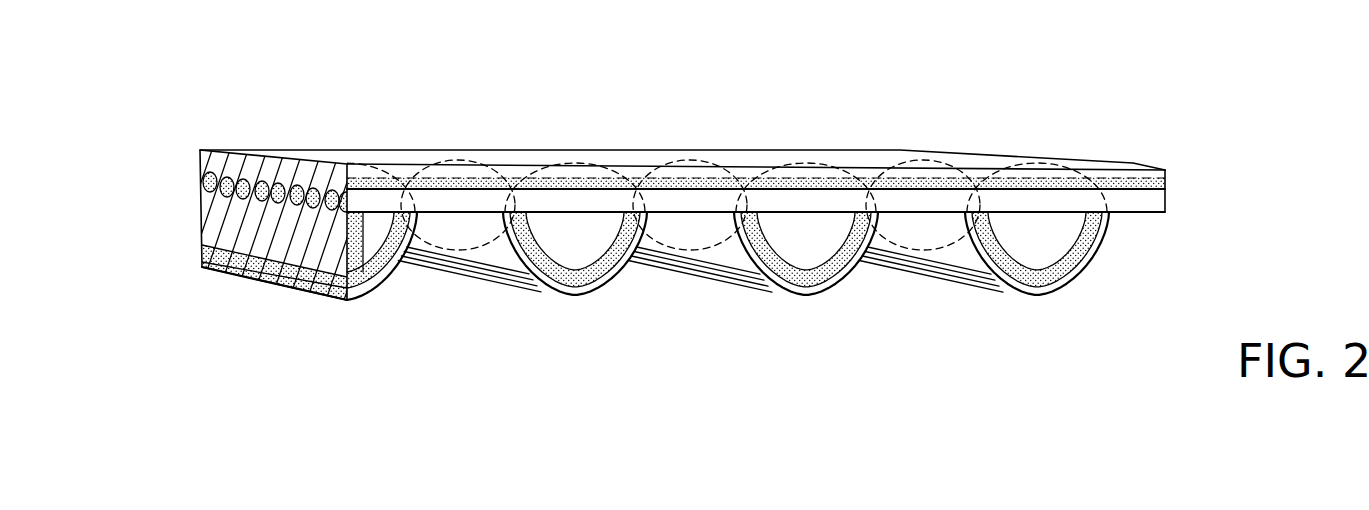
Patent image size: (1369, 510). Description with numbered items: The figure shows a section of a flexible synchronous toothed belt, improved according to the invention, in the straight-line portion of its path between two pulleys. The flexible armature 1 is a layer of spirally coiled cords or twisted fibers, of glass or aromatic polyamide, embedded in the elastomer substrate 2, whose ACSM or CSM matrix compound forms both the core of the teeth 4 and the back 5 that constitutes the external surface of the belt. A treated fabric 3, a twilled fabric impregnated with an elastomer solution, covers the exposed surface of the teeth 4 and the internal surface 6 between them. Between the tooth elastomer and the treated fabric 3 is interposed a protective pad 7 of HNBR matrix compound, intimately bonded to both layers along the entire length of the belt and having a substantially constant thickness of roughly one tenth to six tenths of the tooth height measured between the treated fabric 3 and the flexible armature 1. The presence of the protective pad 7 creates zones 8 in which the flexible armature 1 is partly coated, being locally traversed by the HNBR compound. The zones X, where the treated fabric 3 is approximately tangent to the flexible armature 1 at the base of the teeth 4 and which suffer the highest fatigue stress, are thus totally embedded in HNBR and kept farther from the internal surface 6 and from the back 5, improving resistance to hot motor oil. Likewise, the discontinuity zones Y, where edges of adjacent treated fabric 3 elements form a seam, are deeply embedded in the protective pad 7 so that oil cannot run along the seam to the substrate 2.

The flexible armature 1 is at (1070, 217).
The substrate 2 is at (187, 150).
The treated fabric 3 is at (822, 294).
The teeth 4 is at (583, 247).
The back 5 is at (546, 146).
The internal surface 6 is at (467, 224).
The protective pad 7 is at (372, 302).
The zones of partly-coated flexible armature 8 is at (926, 177).
The zones X is at (729, 221).
The discontinuity zones Y is at (916, 253).